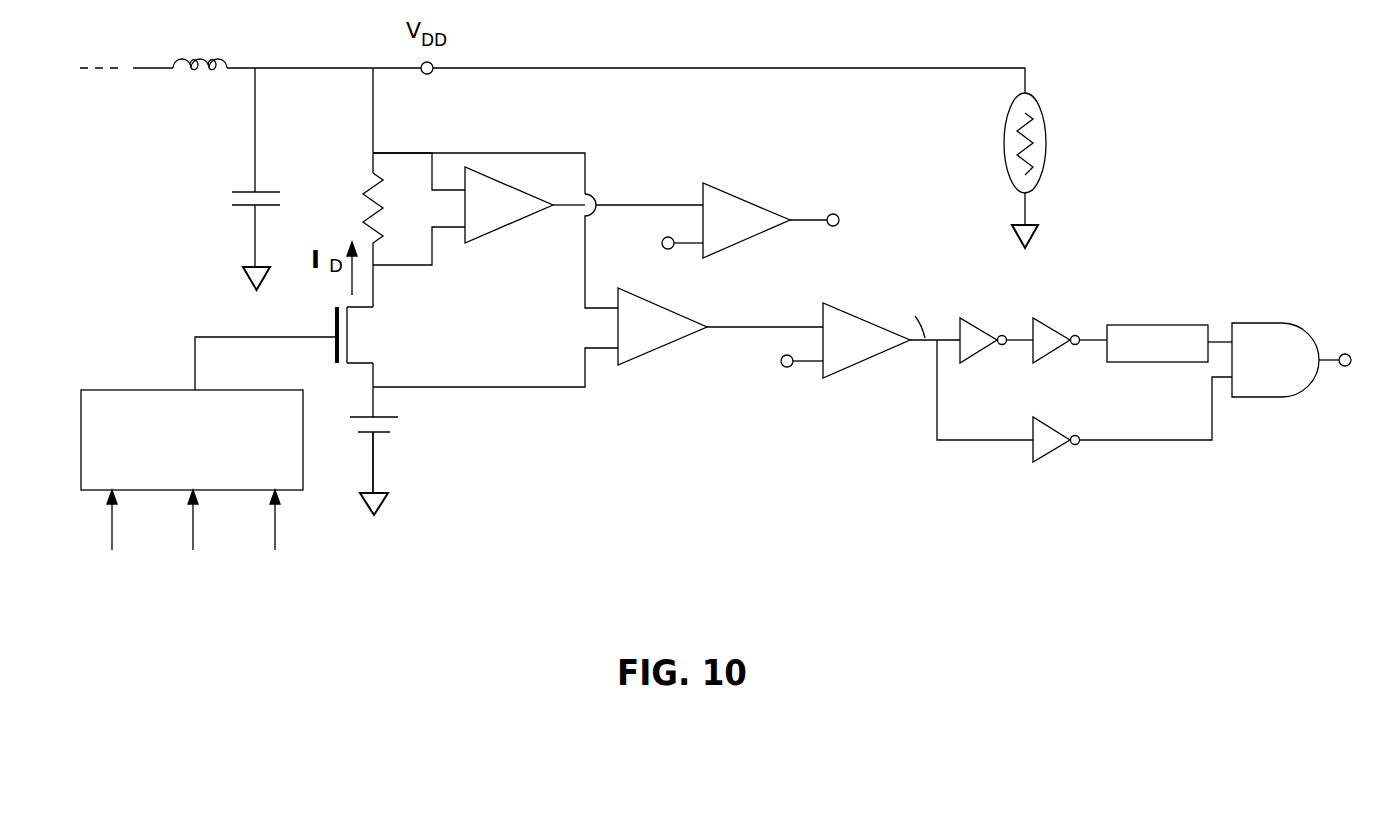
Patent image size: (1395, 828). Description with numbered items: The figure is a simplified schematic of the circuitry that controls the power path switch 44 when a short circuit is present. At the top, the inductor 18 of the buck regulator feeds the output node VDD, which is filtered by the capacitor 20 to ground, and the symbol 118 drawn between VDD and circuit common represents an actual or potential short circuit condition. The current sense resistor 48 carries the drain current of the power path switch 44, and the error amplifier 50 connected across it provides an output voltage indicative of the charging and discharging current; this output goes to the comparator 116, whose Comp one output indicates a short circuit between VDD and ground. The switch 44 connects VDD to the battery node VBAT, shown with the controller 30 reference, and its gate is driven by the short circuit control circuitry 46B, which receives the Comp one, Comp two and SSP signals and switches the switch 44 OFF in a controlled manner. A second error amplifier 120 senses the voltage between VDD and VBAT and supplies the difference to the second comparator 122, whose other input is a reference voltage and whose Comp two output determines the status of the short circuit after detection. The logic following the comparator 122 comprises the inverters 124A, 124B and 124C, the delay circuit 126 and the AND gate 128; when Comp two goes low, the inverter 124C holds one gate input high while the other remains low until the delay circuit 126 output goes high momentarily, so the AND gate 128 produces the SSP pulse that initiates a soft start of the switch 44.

The inductor 18 is at (202, 58).
The filter capacitor 20 is at (242, 210).
The current sense resistor 48 is at (363, 190).
The error amplifier 50 is at (515, 225).
The power path switch 44 is at (368, 335).
The control circuitry 46B is at (110, 388).
The controller 30 is at (365, 435).
The comparator 116 is at (722, 185).
The error amplifier 120 is at (668, 345).
The second comparator 122 is at (830, 300).
The inverter 124A is at (978, 320).
The inverter 124B is at (1052, 320).
The inverter 124C is at (1050, 420).
The delay circuit 126 is at (1153, 322).
The AND gate 128 is at (1258, 322).
The short circuit condition symbol 118 is at (1047, 138).